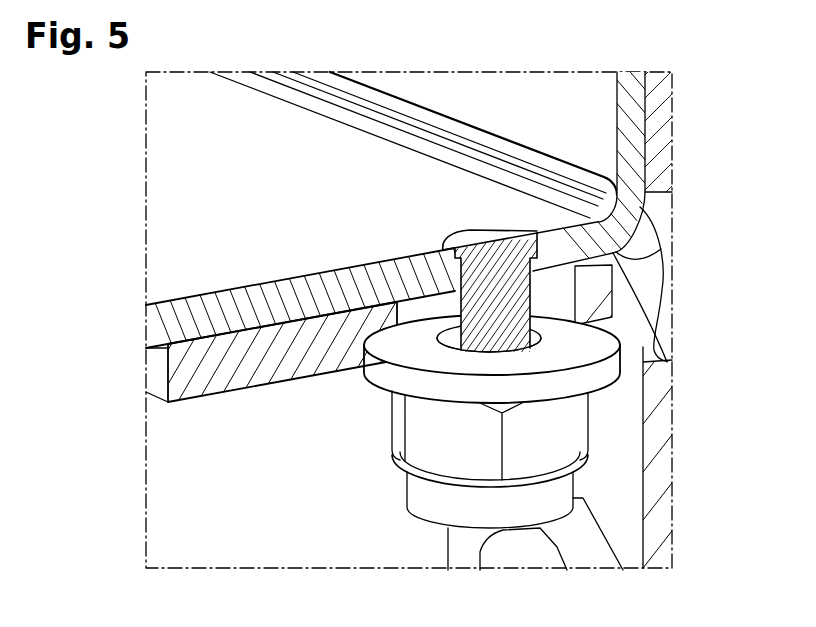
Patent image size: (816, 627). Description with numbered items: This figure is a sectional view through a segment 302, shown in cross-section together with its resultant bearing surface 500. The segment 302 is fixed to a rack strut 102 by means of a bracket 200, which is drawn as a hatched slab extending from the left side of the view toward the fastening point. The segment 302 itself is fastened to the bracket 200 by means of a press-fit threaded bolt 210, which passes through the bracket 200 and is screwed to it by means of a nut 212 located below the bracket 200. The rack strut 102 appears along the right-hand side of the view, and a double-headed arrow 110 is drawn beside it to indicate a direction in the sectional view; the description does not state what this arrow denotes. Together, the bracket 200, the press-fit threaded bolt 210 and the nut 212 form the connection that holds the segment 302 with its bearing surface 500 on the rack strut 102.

The bearing surface 500 is at (190, 247).
The segment 302 is at (637, 125).
The rack strut 102 is at (663, 450).
The axial direction 110 is at (708, 252).
The bracket 200 is at (263, 373).
The nut 212 is at (417, 455).
The press-fit threaded bolt 210 is at (485, 257).